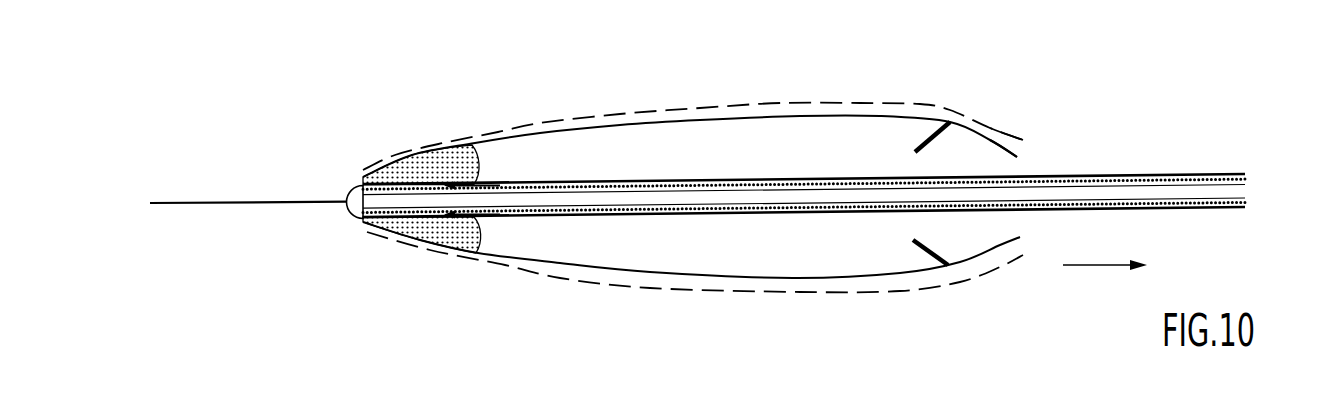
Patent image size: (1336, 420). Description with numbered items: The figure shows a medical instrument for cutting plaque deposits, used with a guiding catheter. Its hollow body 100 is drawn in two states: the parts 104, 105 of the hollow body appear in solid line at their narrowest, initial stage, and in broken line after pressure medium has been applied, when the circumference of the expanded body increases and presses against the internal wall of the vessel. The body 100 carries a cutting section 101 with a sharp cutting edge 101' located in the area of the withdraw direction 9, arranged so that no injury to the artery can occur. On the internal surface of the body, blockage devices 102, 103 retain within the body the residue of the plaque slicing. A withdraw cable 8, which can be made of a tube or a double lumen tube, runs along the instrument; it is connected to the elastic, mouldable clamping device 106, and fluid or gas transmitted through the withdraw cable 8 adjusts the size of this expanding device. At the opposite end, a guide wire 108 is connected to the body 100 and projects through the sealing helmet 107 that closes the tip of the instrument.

The withdraw cable 8 is at (1215, 210).
The withdraw direction 9 is at (1105, 248).
The body 100 is at (693, 190).
The cutting section 101 is at (1054, 109).
The sharp cutting edge 101' is at (1063, 143).
The blockage device 102 is at (927, 140).
The blockage device 103 is at (920, 262).
The part of the hollow body 104 is at (808, 117).
The part of the hollow body 105 is at (657, 275).
The clamping device 106 is at (418, 178).
The sealing helmet 107 is at (344, 192).
The guide wire 108 is at (225, 202).